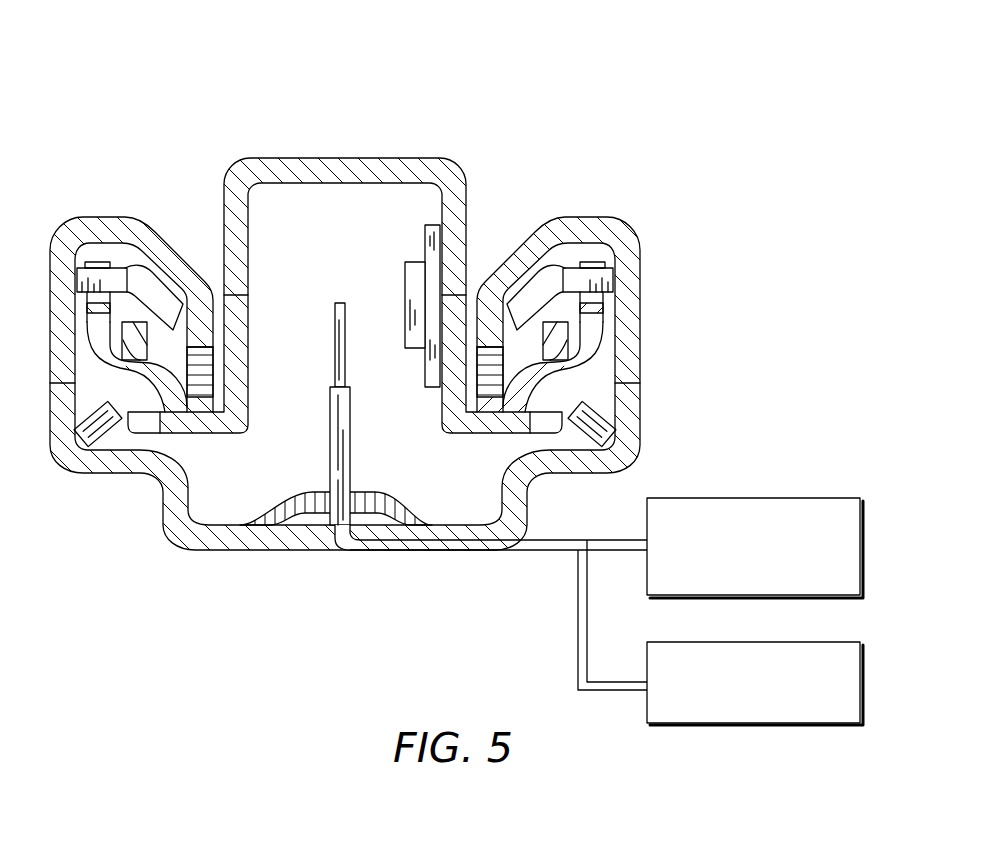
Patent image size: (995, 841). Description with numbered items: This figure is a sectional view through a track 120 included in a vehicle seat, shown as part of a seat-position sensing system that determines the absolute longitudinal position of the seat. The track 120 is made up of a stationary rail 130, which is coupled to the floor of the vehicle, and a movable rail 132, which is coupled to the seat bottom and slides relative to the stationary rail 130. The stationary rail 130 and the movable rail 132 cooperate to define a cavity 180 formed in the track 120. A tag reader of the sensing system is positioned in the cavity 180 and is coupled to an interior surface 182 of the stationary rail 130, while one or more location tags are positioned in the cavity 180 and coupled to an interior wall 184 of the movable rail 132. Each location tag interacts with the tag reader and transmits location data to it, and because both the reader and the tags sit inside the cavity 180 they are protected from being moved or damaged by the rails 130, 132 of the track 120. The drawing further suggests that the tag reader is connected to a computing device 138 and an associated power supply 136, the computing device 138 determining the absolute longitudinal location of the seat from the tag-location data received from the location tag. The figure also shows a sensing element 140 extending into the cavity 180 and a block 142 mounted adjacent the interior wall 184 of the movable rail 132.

The track 120 is at (142, 95).
The stationary rail 130 is at (160, 518).
The movable rail 132 is at (427, 158).
The power supply 136 is at (795, 642).
The computing device 138 is at (795, 498).
The sensor 140 is at (341, 303).
The block 142 is at (405, 277).
The cavity 180 is at (280, 207).
The interior surface 182 is at (218, 525).
The interior wall 184 is at (440, 212).